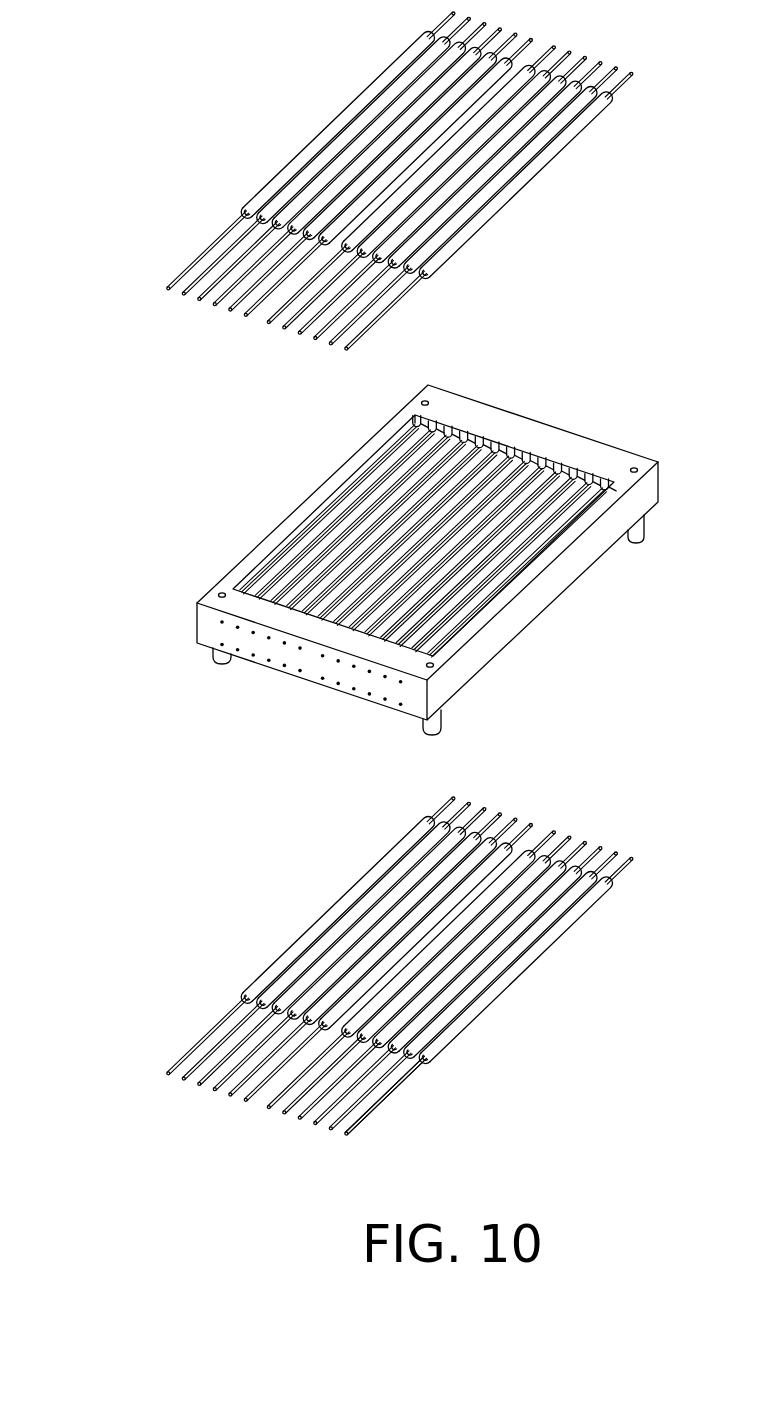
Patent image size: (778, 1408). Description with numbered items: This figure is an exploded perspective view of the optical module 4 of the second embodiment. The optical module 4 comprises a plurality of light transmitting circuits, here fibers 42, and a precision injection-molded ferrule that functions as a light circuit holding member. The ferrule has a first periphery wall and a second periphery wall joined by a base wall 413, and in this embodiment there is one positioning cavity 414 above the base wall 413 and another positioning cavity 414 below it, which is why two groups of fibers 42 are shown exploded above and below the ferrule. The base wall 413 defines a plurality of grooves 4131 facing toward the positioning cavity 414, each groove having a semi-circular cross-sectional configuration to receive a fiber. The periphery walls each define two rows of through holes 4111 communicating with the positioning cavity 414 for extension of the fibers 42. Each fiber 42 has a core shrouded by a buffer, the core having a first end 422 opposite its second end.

The optical module 4 is at (151, 1108).
The fibers 42 is at (552, 157).
The first end 422 is at (383, 1103).
The through holes 4111 is at (397, 707).
The base wall 413 is at (517, 500).
The grooves 4131 is at (562, 520).
The positioning cavity 414 is at (410, 428).